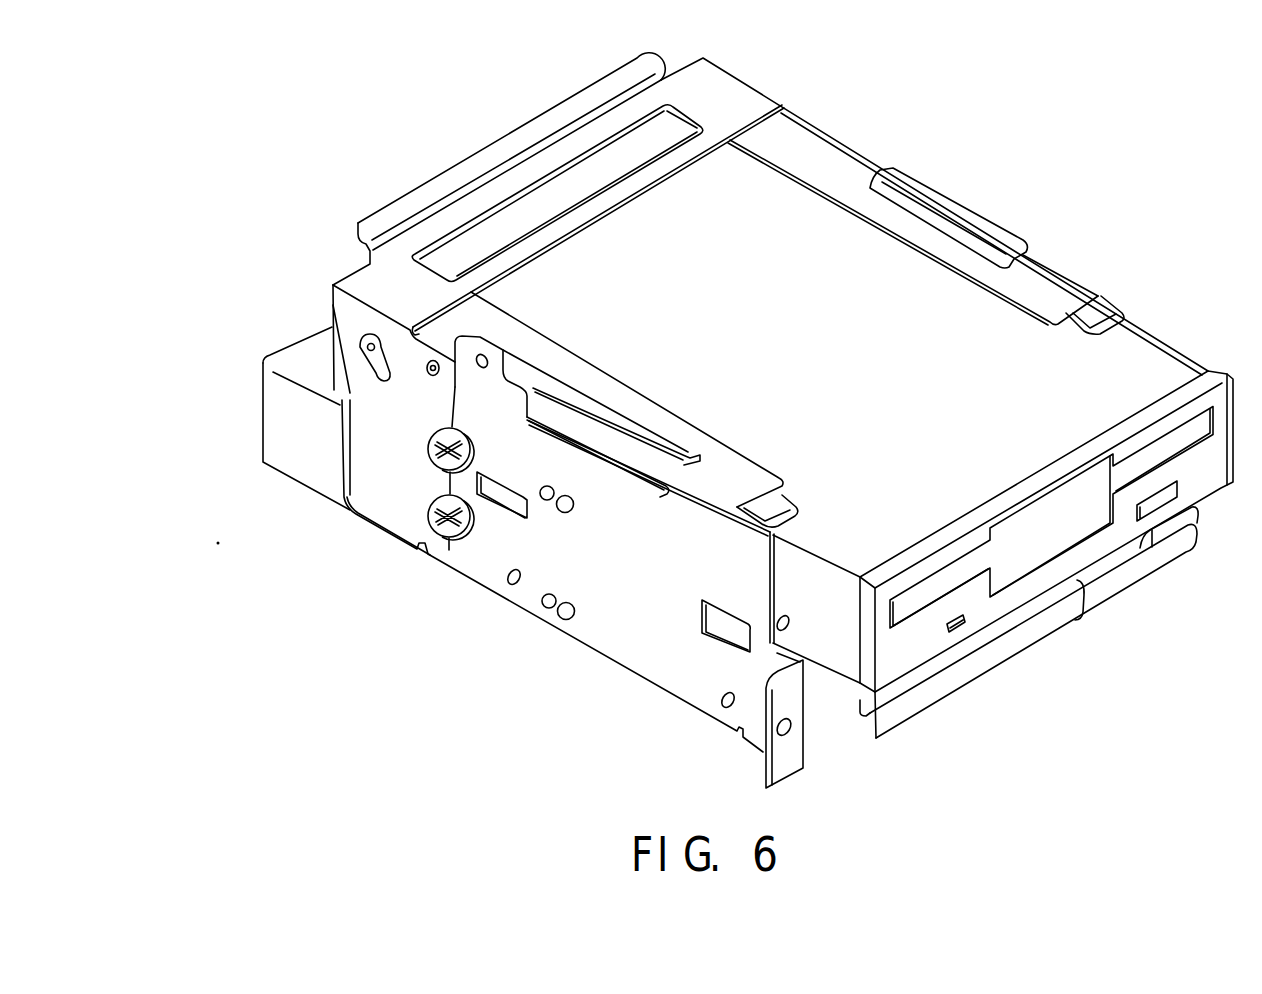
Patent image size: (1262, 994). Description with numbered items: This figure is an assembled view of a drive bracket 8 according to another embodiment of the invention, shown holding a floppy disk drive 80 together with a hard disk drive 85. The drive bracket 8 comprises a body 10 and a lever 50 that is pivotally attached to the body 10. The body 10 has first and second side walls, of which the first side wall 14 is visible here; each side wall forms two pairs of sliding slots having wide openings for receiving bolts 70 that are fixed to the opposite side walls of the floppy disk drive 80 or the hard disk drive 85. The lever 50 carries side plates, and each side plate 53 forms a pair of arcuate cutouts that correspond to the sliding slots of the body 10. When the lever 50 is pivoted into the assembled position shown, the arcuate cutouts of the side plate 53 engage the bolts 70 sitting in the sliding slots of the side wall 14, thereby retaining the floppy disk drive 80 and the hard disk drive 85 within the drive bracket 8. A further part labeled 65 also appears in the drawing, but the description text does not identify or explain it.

The floppy disk drive 80 is at (1143, 356).
The lever 50 is at (477, 140).
The rail slot 65 is at (590, 95).
The drive bracket 8 is at (565, 648).
The body 10 is at (658, 648).
The first side wall 14 is at (707, 683).
The bolts 70 is at (472, 438).
The hard disk drive 85 is at (290, 437).
The side plate 53 is at (390, 462).